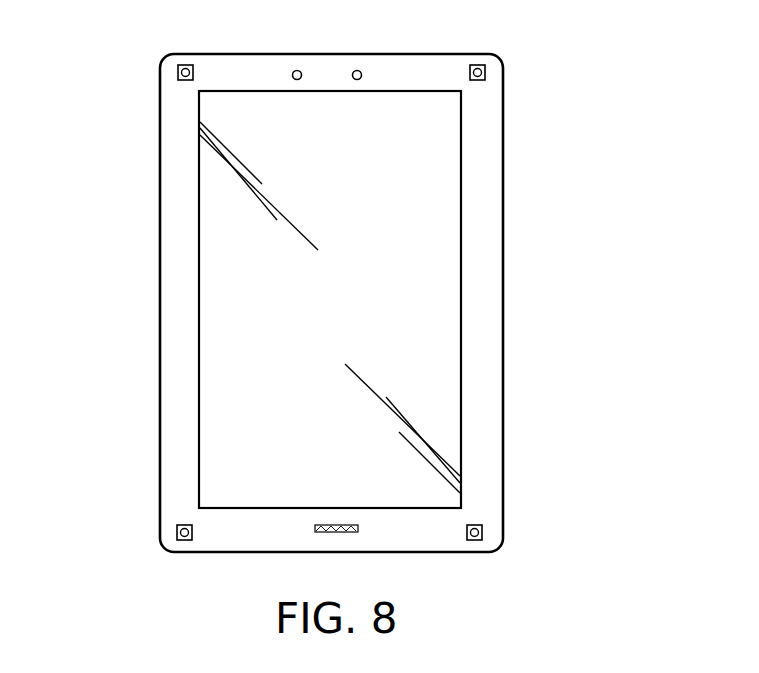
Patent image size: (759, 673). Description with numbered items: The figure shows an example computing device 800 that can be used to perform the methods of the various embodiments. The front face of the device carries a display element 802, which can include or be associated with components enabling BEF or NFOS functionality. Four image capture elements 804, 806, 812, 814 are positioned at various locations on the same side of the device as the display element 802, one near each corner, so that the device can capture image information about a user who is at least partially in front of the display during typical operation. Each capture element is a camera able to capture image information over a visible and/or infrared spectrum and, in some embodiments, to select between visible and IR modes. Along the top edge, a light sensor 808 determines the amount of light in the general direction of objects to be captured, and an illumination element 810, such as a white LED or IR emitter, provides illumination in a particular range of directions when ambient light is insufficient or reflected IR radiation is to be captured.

The computing device 800 is at (647, 109).
The display element 802 is at (199, 102).
The image capture element 804 is at (185, 66).
The image capture element 806 is at (478, 66).
The light sensor 808 is at (360, 72).
The illumination element 810 is at (294, 72).
The image capture element 812 is at (183, 541).
The image capture element 814 is at (477, 541).